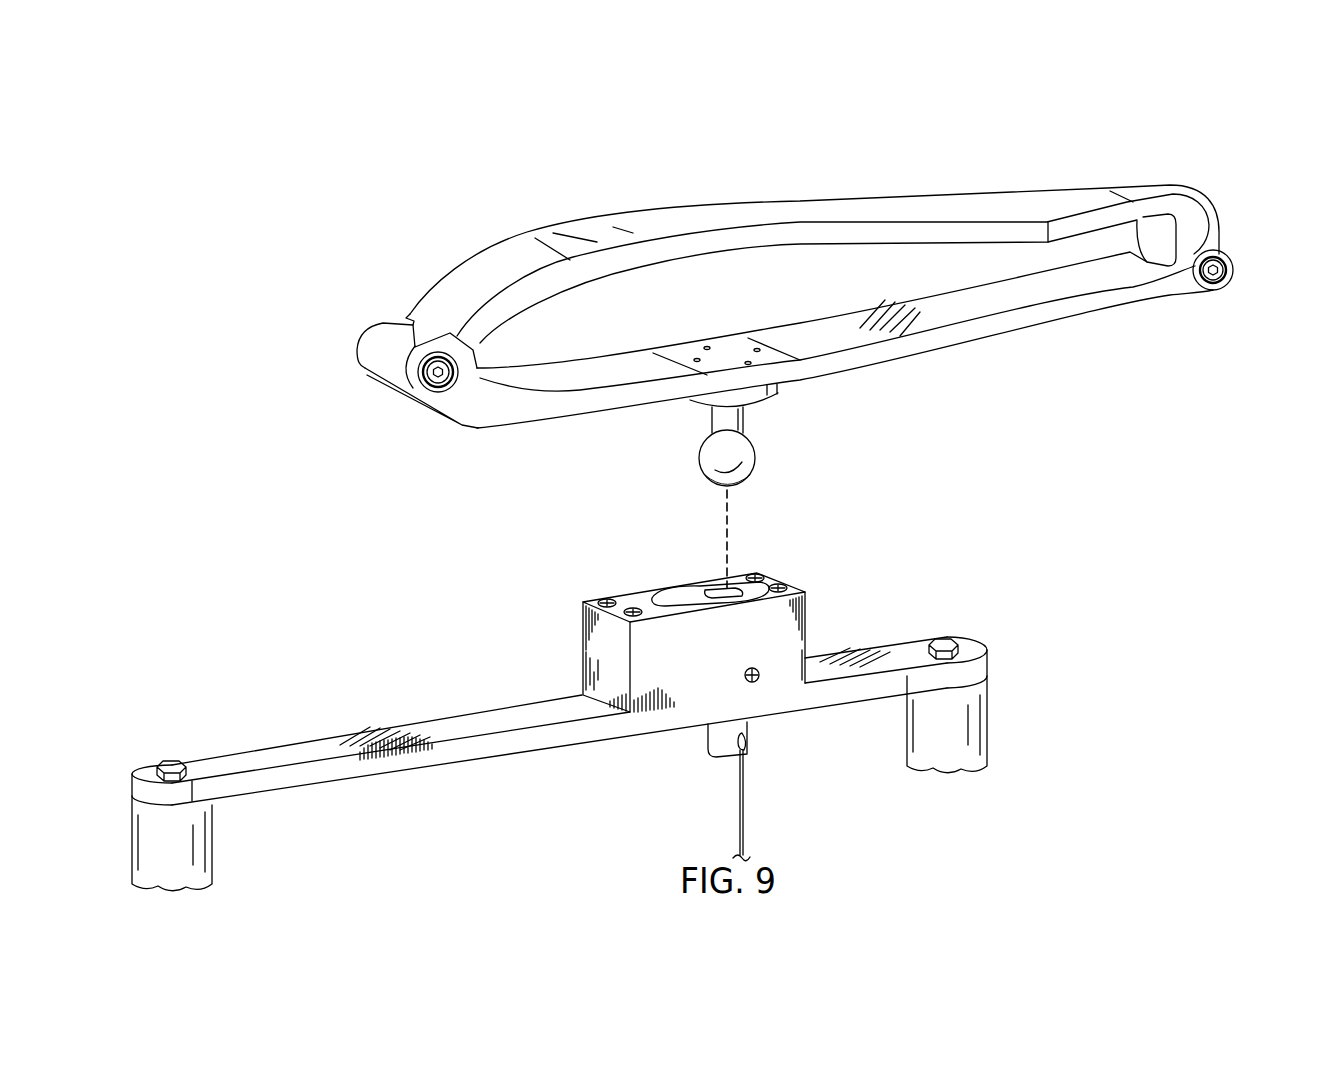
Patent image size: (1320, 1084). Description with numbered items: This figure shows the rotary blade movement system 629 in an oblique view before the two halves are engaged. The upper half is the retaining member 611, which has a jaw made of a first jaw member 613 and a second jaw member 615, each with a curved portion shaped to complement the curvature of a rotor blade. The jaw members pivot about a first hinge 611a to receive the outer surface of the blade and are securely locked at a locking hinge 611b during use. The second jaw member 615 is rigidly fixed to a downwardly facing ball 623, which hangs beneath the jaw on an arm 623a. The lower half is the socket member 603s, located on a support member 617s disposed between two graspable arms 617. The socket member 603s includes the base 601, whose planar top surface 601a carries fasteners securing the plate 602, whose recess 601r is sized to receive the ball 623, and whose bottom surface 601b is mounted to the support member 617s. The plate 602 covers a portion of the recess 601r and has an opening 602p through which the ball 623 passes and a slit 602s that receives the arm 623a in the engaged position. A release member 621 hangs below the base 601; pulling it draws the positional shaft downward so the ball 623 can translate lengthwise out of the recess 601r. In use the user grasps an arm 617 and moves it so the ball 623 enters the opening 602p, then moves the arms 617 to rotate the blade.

The rotary blade movement system 629 is at (1009, 136).
The retaining member 611 is at (497, 230).
The first jaw member 613 is at (797, 212).
The second jaw member 615 is at (878, 355).
The first hinge 611a is at (442, 389).
The locking hinge 611b is at (1230, 258).
The ball 623 is at (758, 458).
The arm 623a is at (745, 421).
The base 601 is at (582, 656).
The top surface 601a is at (623, 598).
The recess 601r is at (712, 596).
The slit 602s is at (675, 595).
The plate 602 is at (778, 572).
The opening 602p is at (745, 602).
The socket member 603s is at (822, 618).
The bottom surface 601b is at (684, 708).
The support member 617s is at (282, 748).
The graspable arms 617 is at (214, 847).
The release member 621 is at (745, 790).